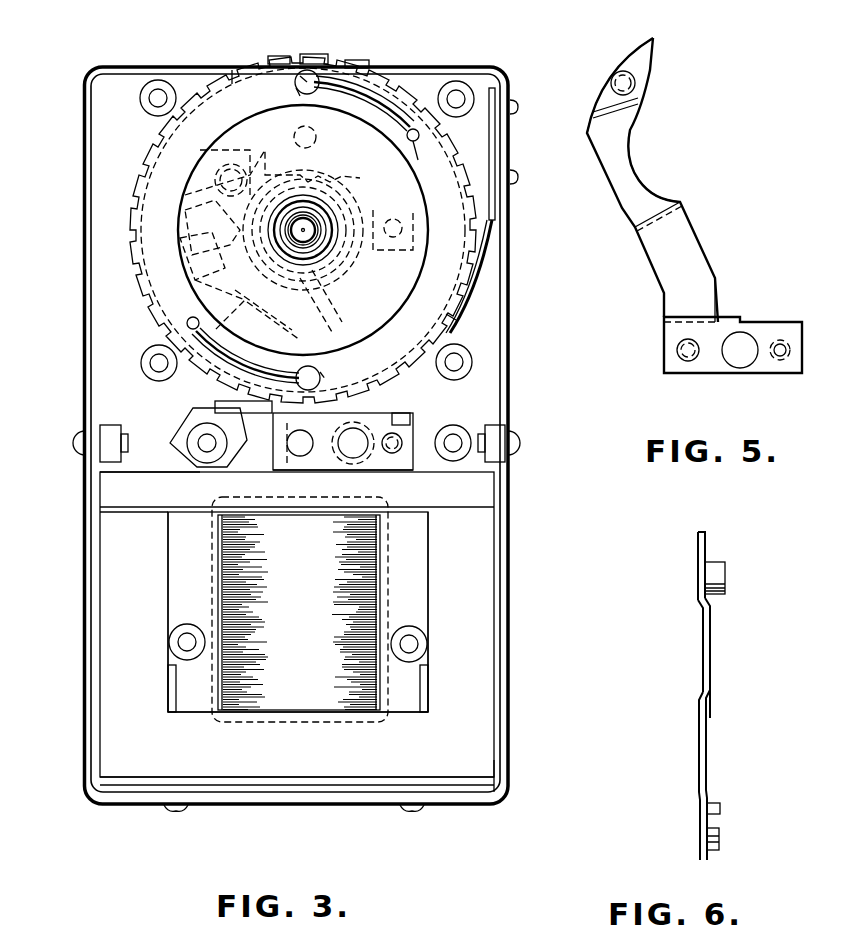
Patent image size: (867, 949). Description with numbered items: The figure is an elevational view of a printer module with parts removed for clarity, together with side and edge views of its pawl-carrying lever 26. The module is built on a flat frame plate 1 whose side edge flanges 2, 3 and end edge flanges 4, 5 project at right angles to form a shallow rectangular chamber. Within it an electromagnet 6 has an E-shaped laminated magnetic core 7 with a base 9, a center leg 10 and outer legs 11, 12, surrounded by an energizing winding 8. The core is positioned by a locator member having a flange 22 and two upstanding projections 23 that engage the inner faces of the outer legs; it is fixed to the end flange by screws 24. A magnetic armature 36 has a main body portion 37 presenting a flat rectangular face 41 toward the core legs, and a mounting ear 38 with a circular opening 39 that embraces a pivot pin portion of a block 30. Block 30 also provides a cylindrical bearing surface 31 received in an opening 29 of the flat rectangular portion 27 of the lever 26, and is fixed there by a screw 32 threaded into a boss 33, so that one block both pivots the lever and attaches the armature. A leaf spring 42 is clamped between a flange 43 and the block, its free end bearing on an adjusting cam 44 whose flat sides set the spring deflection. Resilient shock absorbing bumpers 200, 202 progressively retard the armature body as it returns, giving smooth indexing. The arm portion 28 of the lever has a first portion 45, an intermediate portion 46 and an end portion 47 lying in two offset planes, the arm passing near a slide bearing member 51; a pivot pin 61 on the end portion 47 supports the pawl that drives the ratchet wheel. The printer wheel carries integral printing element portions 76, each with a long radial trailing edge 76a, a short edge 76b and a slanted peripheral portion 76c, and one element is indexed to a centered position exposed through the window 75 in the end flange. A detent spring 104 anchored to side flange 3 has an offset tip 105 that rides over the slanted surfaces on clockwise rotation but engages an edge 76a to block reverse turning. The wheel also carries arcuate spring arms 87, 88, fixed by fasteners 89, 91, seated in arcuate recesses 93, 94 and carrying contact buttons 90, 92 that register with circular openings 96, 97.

In FIG. 3, the frame plate 1 is at (310, 371).
In FIG. 3, the side edge flange 2 is at (86, 441).
In FIG. 3, the side edge flange 3 is at (505, 439).
In FIG. 3, the end edge flange 4 is at (172, 68).
In FIG. 3, the end edge flange 5 is at (292, 806).
In FIG. 3, the electromagnet 6 is at (114, 754).
In FIG. 3, the magnetic core 7 is at (100, 728).
In FIG. 3, the energizing winding 8 is at (378, 688).
In FIG. 3, the base 9 is at (298, 739).
In FIG. 3, the center leg 10 is at (378, 515).
In FIG. 3, the outer leg 11 is at (144, 612).
In FIG. 3, the outer leg 12 is at (450, 612).
In FIG. 3, the flange 22 is at (486, 809).
In FIG. 3, the upstanding projections 23 is at (168, 690).
In FIG. 3, the screws 24 is at (172, 810).
In FIG. 5, the lever 26 is at (666, 388).
In FIG. 5, the flat rectangular portion 27 is at (668, 362).
In FIG. 6, the flat rectangular portion 27 is at (700, 822).
In FIG. 5, the arm portion 28 is at (714, 245).
In FIG. 5, the opening 29 is at (755, 344).
In FIG. 3, the block 30 is at (404, 470).
In FIG. 3, the cylindrical bearing surface 31 is at (360, 455).
In FIG. 3, the screw 32 is at (400, 441).
In FIG. 6, the boss 33 is at (721, 837).
In FIG. 3, the magnetic armature 36 is at (100, 492).
In FIG. 3, the main body portion 37 is at (150, 484).
In FIG. 3, the mounting ear 38 is at (286, 457).
In FIG. 3, the circular opening 39 is at (288, 441).
In FIG. 3, the flat rectangular face 41 is at (204, 512).
In FIG. 3, the leaf spring 42 is at (192, 414).
In FIG. 3, the flange 43 is at (383, 415).
In FIG. 6, the flange 43 is at (718, 808).
In FIG. 3, the adjusting cam 44 is at (176, 446).
In FIG. 3, the first portion 45 is at (308, 340).
In FIG. 5, the first portion 45 is at (714, 282).
In FIG. 6, the first portion 45 is at (699, 754).
In FIG. 3, the intermediate portion 46 is at (196, 215).
In FIG. 5, the intermediate portion 46 is at (636, 178).
In FIG. 6, the intermediate portion 46 is at (703, 647).
In FIG. 3, the end portion 47 is at (195, 195).
In FIG. 5, the end portion 47 is at (643, 84).
In FIG. 6, the end portion 47 is at (698, 552).
In FIG. 3, the slide bearing member 51 is at (186, 235).
In FIG. 5, the pivot pin 61 is at (618, 75).
In FIG. 6, the pivot pin 61 is at (725, 576).
In FIG. 3, the window 75 is at (240, 52).
In FIG. 3, the printing element portions 76 is at (308, 61).
In FIG. 3, the trailing edge 76a is at (362, 56).
In FIG. 3, the opposite edge 76b is at (298, 54).
In FIG. 3, the peripheral portion 76c is at (280, 56).
In FIG. 3, the spring arm 87 is at (362, 92).
In FIG. 3, the spring arm 88 is at (233, 351).
In FIG. 3, the fastener 89 is at (423, 156).
In FIG. 3, the contact button 90 is at (296, 81).
In FIG. 3, the fastener 91 is at (190, 318).
In FIG. 3, the contact button 92 is at (318, 373).
In FIG. 3, the arcuate recess 93 is at (366, 108).
In FIG. 3, the arcuate recess 94 is at (266, 359).
In FIG. 3, the circular opening 96 is at (296, 93).
In FIG. 3, the circular opening 97 is at (322, 385).
In FIG. 3, the detent spring 104 is at (500, 226).
In FIG. 3, the offset tip 105 is at (456, 320).
In FIG. 3, the shock absorbing bumper 200 is at (104, 426).
In FIG. 3, the shock absorbing bumper 202 is at (512, 430).